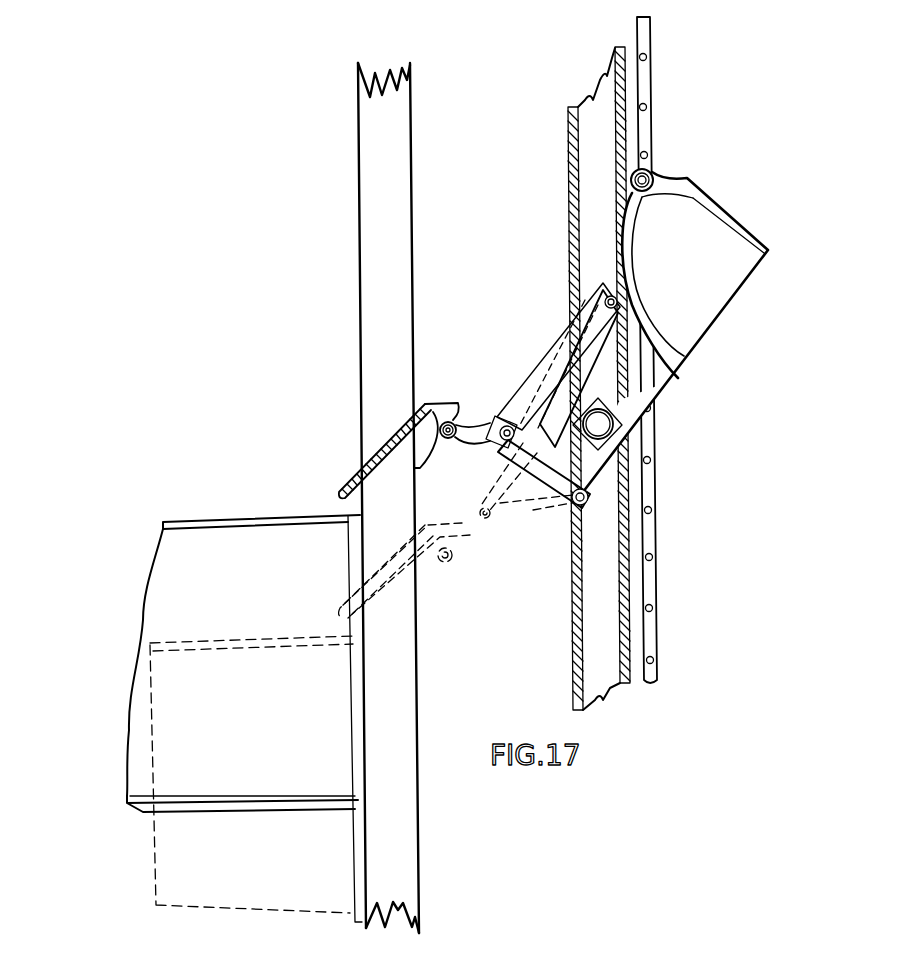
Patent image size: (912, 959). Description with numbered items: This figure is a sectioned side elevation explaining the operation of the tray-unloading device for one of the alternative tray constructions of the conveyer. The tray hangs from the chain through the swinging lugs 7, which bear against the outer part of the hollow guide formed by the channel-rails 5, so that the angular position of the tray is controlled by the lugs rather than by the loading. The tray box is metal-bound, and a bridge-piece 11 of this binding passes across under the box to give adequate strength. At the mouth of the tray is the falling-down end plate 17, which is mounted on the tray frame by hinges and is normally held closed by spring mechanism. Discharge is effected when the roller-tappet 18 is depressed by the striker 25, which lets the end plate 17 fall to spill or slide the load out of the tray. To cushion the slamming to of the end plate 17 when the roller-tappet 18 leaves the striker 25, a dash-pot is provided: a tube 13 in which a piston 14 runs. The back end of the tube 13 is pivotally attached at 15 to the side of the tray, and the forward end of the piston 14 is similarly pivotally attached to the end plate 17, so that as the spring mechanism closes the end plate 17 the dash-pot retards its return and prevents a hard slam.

The channel-rails 5 is at (612, 363).
The swinging lugs 7 is at (650, 173).
The bridge-piece 11 is at (630, 285).
The tube 13 is at (552, 370).
The piston 14 is at (503, 417).
The pivotal attachment 15 is at (608, 296).
The falling-down end plate 17 is at (543, 470).
The roller-tappet 18 is at (448, 437).
The striker 25 is at (450, 405).